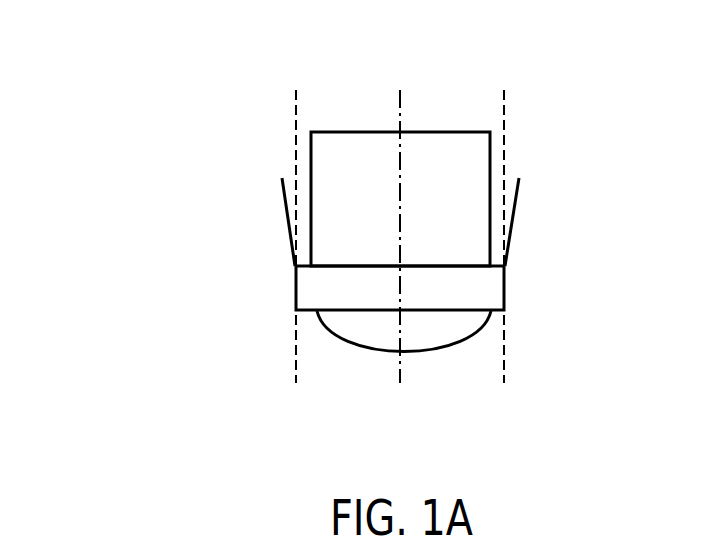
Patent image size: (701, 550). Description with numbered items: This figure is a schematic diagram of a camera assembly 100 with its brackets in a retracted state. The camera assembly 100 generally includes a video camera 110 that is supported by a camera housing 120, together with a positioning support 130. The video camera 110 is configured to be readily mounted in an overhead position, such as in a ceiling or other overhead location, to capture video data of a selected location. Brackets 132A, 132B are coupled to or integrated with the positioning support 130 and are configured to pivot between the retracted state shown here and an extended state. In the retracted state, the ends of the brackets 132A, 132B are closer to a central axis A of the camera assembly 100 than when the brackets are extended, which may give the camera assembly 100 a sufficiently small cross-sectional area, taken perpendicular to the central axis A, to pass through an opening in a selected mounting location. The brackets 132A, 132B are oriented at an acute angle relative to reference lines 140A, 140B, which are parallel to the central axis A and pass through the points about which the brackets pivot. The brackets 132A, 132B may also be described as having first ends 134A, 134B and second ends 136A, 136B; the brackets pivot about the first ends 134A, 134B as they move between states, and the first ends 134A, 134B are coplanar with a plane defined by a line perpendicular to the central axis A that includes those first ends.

The camera assembly 100 is at (123, 203).
The video camera 110 is at (364, 357).
The camera housing 120 is at (369, 132).
The positioning support 130 is at (283, 297).
The bracket 132A is at (288, 220).
The bracket 132B is at (512, 220).
The first end 134A is at (293, 262).
The first end 134B is at (508, 268).
The second end 136A is at (282, 178).
The second end 136B is at (523, 180).
The reference line 140A is at (295, 118).
The reference line 140B is at (505, 103).
The central axis A is at (402, 103).